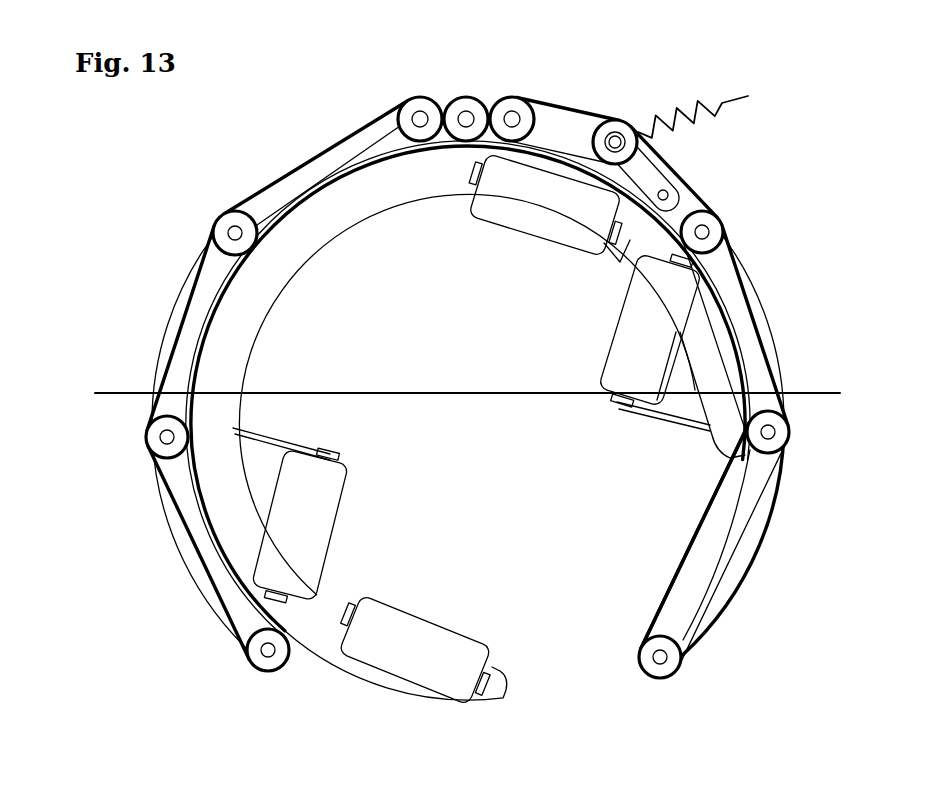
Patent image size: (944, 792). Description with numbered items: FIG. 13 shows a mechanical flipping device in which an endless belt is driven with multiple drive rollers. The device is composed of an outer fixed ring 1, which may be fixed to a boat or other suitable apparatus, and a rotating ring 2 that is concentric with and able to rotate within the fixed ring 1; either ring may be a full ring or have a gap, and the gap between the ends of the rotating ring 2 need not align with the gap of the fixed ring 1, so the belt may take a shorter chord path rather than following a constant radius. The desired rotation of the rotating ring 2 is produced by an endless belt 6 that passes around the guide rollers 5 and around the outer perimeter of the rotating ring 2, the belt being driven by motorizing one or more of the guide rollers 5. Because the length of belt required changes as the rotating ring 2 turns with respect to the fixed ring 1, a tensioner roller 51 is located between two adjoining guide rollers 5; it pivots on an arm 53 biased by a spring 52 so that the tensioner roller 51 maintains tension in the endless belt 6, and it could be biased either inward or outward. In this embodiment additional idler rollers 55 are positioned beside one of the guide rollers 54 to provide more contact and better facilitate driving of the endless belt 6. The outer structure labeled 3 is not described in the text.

The fixed ring 1 is at (316, 150).
The rotating ring 2 is at (357, 224).
The outer ring 3 is at (793, 392).
The guide rollers 5 is at (212, 238).
The endless belt 6 is at (690, 540).
The tensioner roller 51 is at (618, 122).
The spring 52 is at (722, 103).
The arm 53 is at (668, 190).
The guide roller 54 is at (466, 97).
The idler rollers 55 is at (418, 97).